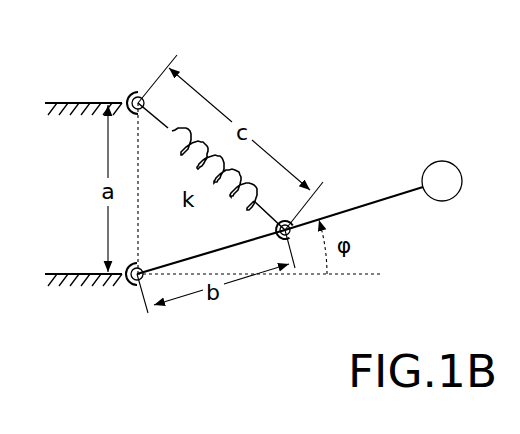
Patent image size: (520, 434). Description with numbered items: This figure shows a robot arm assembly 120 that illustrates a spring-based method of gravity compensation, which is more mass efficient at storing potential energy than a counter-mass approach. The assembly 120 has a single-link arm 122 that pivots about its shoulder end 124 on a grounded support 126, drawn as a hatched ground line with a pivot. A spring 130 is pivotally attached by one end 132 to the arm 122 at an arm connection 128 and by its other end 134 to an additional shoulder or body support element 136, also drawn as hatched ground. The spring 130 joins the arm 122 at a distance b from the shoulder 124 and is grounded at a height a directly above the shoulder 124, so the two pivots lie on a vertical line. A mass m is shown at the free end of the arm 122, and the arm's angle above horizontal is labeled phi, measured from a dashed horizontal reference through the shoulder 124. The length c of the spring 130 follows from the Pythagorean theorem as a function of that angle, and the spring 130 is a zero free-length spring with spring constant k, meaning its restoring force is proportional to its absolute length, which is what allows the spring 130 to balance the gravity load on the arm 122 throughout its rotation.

The arm assembly 120 is at (353, 104).
The single-link arm 122 is at (343, 208).
The shoulder/end 124 is at (138, 286).
The support 126 is at (97, 277).
The arm connection 128 is at (318, 196).
The spring 130 is at (232, 160).
The spring end 132 is at (297, 242).
The spring end 134 is at (139, 97).
The body support element 136 is at (74, 103).